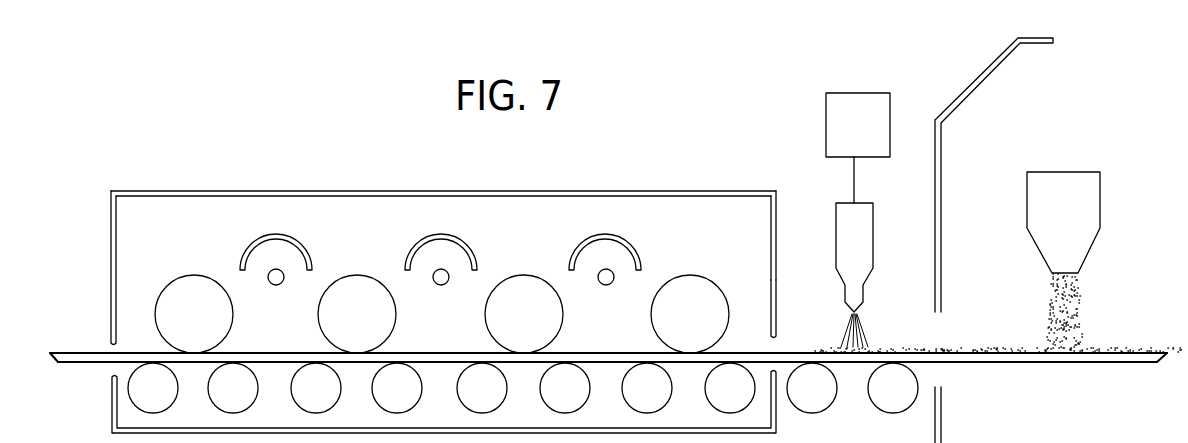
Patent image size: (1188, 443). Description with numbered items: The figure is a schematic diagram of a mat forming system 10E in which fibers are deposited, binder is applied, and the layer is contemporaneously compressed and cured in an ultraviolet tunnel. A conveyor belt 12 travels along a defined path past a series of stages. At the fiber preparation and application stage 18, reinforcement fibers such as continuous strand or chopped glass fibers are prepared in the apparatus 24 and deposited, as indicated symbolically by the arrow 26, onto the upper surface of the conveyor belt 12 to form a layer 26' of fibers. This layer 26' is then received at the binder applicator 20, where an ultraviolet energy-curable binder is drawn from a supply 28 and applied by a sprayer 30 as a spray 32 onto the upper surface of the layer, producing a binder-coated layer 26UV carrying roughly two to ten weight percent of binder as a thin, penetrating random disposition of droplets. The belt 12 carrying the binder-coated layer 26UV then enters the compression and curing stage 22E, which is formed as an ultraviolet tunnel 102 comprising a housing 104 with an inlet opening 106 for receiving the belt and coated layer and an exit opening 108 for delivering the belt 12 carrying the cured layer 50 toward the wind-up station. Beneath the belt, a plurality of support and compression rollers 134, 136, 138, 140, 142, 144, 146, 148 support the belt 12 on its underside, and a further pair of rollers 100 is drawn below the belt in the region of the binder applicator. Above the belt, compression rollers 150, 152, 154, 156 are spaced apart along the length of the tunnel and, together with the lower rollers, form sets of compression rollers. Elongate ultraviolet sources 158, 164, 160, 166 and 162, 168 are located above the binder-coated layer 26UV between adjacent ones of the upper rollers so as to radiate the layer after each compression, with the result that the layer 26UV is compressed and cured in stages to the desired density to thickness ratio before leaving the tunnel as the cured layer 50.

The mat forming system 10E is at (332, 138).
The conveyor belt 12 is at (993, 361).
The fiber preparation and application stage 18 is at (988, 66).
The binder applicator 20 is at (815, 100).
The compression and curing stage 22E is at (484, 189).
The fiber preparation apparatus 24 is at (1035, 193).
The fiber deposition 26 is at (1092, 313).
The layer of fibers 26' is at (949, 332).
The binder-coated layer 26UV is at (818, 338).
The binder supply 28 is at (877, 102).
The sprayer 30 is at (867, 222).
The spray 32 is at (865, 322).
The cured layer 50 is at (122, 355).
The support rollers 100 is at (880, 395).
The ultraviolet tunnel 102 is at (736, 188).
The housing 104 is at (361, 196).
The inlet opening 106 is at (768, 343).
The exit opening 108 is at (111, 347).
The support and compression roller 134 is at (718, 389).
The support and compression roller 136 is at (633, 389).
The support and compression roller 138 is at (551, 389).
The support and compression roller 140 is at (471, 389).
The support and compression roller 142 is at (384, 389).
The support and compression roller 144 is at (304, 390).
The support and compression roller 146 is at (224, 390).
The support and compression roller 148 is at (152, 392).
The compression roller 150 is at (708, 287).
The compression roller 152 is at (542, 288).
The compression roller 154 is at (370, 290).
The compression roller 156 is at (184, 291).
The ultraviolet source 158 is at (583, 247).
The ultraviolet source 160 is at (411, 248).
The ultraviolet source 162 is at (238, 248).
The ultraviolet source 164 is at (633, 236).
The ultraviolet source 166 is at (446, 221).
The ultraviolet source 168 is at (278, 236).